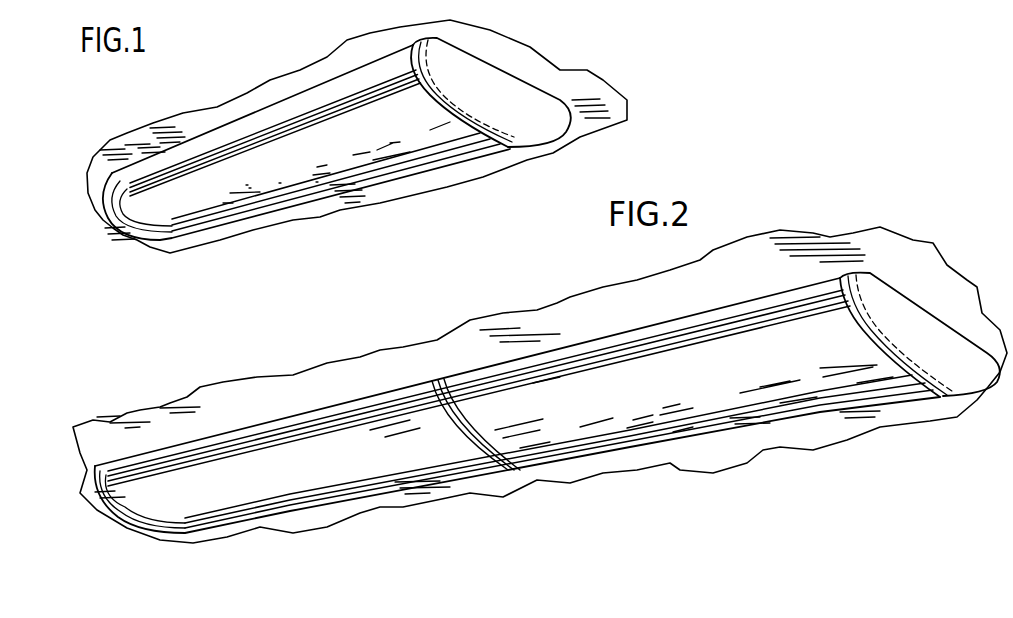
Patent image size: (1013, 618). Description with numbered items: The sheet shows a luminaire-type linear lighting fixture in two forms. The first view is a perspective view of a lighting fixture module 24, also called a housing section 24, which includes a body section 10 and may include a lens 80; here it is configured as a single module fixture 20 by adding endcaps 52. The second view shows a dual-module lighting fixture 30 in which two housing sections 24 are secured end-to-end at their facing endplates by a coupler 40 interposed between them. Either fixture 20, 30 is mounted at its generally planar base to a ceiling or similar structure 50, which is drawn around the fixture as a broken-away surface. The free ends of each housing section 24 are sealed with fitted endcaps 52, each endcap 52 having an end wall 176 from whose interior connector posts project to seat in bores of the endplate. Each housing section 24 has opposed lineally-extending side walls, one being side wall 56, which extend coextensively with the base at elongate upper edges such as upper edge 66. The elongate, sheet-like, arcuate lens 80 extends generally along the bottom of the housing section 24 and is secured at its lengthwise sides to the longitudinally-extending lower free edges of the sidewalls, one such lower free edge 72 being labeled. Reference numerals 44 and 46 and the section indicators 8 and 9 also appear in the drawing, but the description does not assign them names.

In FIG. 1, the body section 10 is at (359, 167).
In FIG. 1, the single module fixture 20 is at (242, 253).
In FIG. 1, the lighting fixture module 24 is at (141, 157).
In FIG. 2, the lighting fixture module 24 is at (176, 444).
In FIG. 2, the dual-module lighting fixture 30 is at (812, 228).
In FIG. 2, the coupler 40 is at (483, 460).
In FIG. 1, the lower frame edge 44 is at (453, 140).
In FIG. 1, the end rim 46 is at (167, 212).
In FIG. 1, the ceiling or similar structure 50 is at (231, 118).
In FIG. 2, the ceiling or similar structure 50 is at (636, 297).
In FIG. 1, the endcap 52 is at (520, 93).
In FIG. 2, the endcap 52 is at (118, 508).
In FIG. 1, the side wall 56 is at (302, 100).
In FIG. 2, the side wall 56 is at (280, 428).
In FIG. 1, the elongate upper edge 66 is at (176, 130).
In FIG. 1, the lower free edge 72 is at (123, 220).
In FIG. 2, the lower free edge 72 is at (222, 463).
In FIG. 1, the lens 80 is at (270, 187).
In FIG. 2, the lens 80 is at (390, 468).
In FIG. 2, the end wall 176 is at (953, 343).
In FIG. 2, the section line 8- 8 is at (452, 463).
In FIG. 2, the section line 9- 9 is at (557, 333).